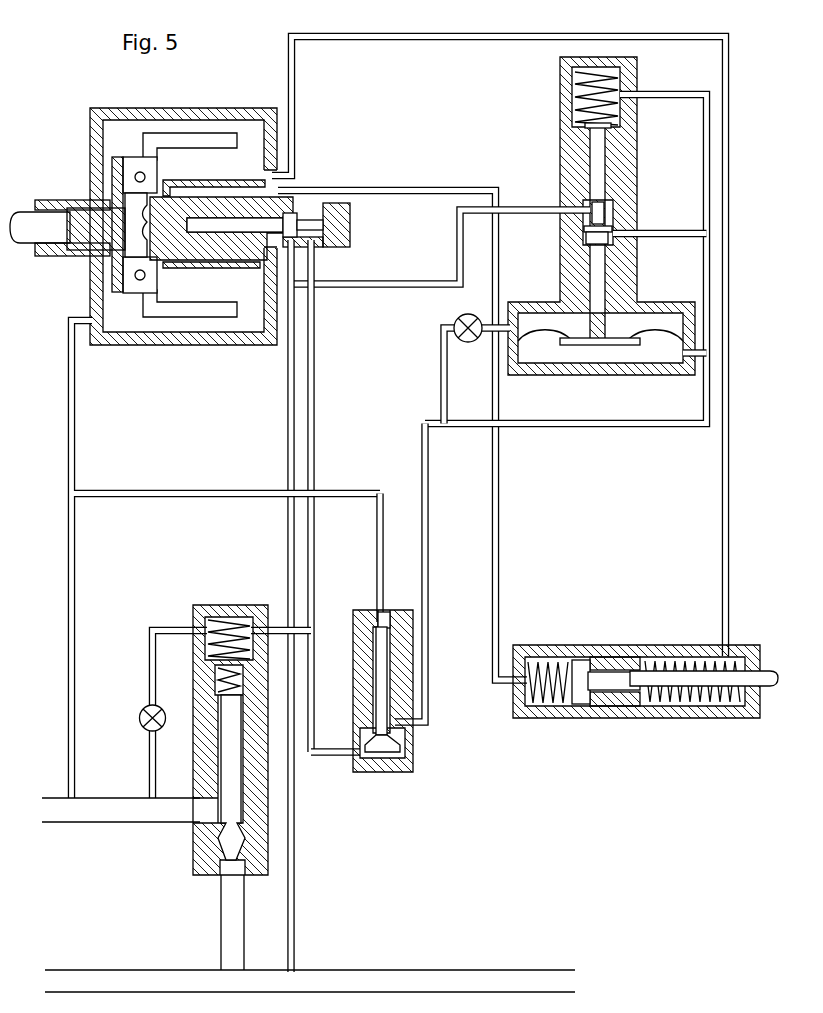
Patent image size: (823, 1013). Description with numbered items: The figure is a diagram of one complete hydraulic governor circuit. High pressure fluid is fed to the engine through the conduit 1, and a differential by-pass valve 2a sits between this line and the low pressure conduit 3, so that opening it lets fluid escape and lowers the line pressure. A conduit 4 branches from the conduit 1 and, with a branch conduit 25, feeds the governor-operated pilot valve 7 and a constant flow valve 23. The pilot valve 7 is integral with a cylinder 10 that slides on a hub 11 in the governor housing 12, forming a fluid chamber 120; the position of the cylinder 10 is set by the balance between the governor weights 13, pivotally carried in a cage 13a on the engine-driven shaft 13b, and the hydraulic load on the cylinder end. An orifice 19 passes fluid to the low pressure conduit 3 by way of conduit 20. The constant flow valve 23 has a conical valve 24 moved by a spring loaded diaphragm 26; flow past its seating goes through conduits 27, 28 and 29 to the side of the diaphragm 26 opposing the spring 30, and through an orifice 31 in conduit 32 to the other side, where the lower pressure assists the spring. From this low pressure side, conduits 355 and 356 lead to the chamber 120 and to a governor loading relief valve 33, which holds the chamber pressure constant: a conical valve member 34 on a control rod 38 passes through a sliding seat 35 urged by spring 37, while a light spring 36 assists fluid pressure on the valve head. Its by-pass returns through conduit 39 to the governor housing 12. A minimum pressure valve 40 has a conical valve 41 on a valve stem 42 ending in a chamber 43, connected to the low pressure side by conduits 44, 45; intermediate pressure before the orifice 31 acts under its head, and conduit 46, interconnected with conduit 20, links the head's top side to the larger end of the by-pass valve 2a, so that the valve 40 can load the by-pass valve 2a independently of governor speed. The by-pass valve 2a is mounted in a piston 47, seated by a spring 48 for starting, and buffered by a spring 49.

The conduit 1 is at (300, 978).
The differential by-pass valve 2a is at (232, 802).
The low pressure conduit 3 is at (100, 813).
The conduit 4 is at (298, 841).
The pilot valve 7 is at (250, 223).
The cylinder 10 is at (168, 270).
The hub 11 is at (263, 250).
The governor housing 12 is at (226, 117).
The governor weights 13 is at (193, 139).
The cage or carrier 13a is at (120, 278).
The shaft 13b is at (27, 222).
The orifice 19 is at (140, 718).
The conduit 20 is at (314, 350).
The constant flow valve 23 is at (567, 274).
The conical valve 24 is at (613, 232).
The branch conduit 25 is at (390, 285).
The spring loaded diaphragm 26 is at (660, 333).
The conduit 27 is at (652, 236).
The conduit 28 is at (704, 96).
The conduit 29 is at (702, 385).
The spring 30 is at (578, 83).
The orifice 31 is at (457, 318).
The conduit 32 is at (443, 373).
The governor loading relief valve 33 is at (643, 656).
The conical valve member 34 is at (584, 676).
The sliding seat 35 is at (620, 700).
The light spring 36 is at (548, 702).
The spring 37 is at (705, 697).
The control rod 38 is at (767, 690).
The conduit 39 is at (729, 436).
The minimum pressure valve 40 is at (370, 770).
The conical valve 41 is at (392, 741).
The valve stem 42 is at (383, 659).
The chamber 43 is at (380, 625).
The conduit 44 is at (358, 493).
The conduit 45 is at (71, 538).
The conduit 46 is at (318, 756).
The piston 47 is at (213, 753).
The spring 48 is at (226, 617).
The spring 49 is at (225, 684).
The fluid chamber 120 is at (180, 200).
The conduit 355 is at (434, 191).
The conduit 356 is at (500, 529).